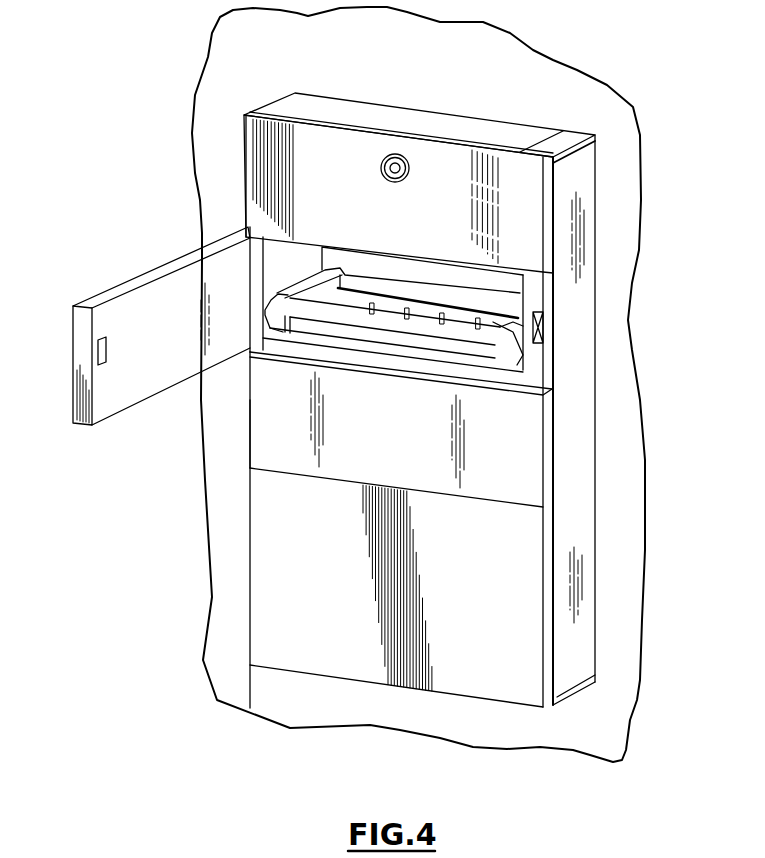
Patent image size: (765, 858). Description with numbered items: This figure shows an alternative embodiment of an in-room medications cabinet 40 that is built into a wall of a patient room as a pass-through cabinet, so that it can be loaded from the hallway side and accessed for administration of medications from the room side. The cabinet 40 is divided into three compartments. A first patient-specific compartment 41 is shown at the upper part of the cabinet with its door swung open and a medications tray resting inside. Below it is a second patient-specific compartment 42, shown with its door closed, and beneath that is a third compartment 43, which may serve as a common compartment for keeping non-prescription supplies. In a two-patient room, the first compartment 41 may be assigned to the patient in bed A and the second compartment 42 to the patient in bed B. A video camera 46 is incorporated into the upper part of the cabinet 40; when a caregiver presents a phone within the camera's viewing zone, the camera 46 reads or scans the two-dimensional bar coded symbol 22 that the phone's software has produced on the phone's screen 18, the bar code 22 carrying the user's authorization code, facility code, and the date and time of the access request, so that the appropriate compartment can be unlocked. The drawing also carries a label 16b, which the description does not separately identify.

The in-room medications cabinet 40 is at (587, 292).
The first patient-specific compartment 41 is at (130, 275).
The second patient-specific compartment 42 is at (275, 393).
The third compartment 43 is at (283, 623).
The video camera 46 is at (386, 162).
The two-dimensional bar code 22 is at (287, 270).
The ice mold tray 16b is at (476, 303).
The screen 18 is at (440, 347).
The bed A is at (95, 356).
The bed B is at (273, 413).